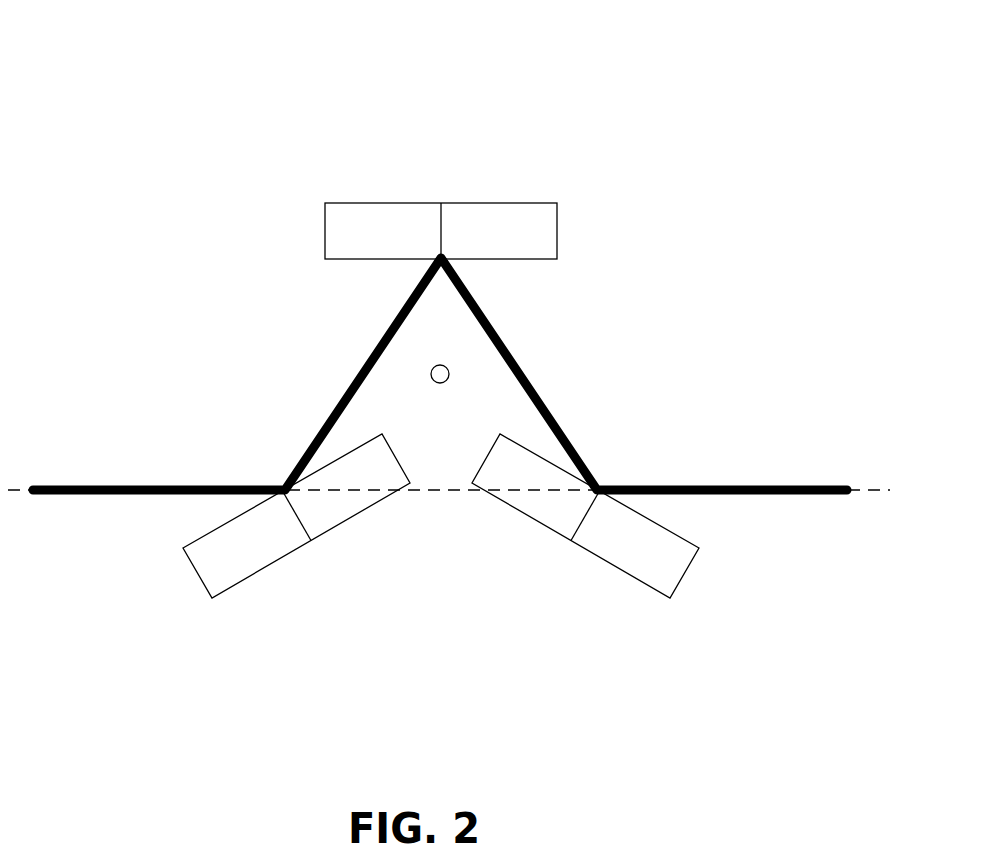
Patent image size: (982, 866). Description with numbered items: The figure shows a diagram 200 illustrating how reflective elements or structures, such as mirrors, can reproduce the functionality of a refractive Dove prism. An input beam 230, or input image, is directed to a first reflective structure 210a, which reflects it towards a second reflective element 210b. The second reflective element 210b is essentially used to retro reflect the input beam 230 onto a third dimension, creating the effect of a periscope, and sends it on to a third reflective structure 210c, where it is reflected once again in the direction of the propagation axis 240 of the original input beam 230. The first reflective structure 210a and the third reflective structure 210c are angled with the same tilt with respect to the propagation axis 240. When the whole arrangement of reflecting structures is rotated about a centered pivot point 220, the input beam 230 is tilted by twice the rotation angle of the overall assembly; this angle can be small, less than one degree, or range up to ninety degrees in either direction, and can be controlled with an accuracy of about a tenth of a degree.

The diagram 200 is at (160, 52).
The first reflective structure 210a is at (190, 552).
The second reflective element 210b is at (557, 217).
The third reflective structure 210c is at (700, 547).
The centered pivot point 220 is at (454, 410).
The input beam 230 is at (92, 486).
The propagation axis 240 is at (882, 492).